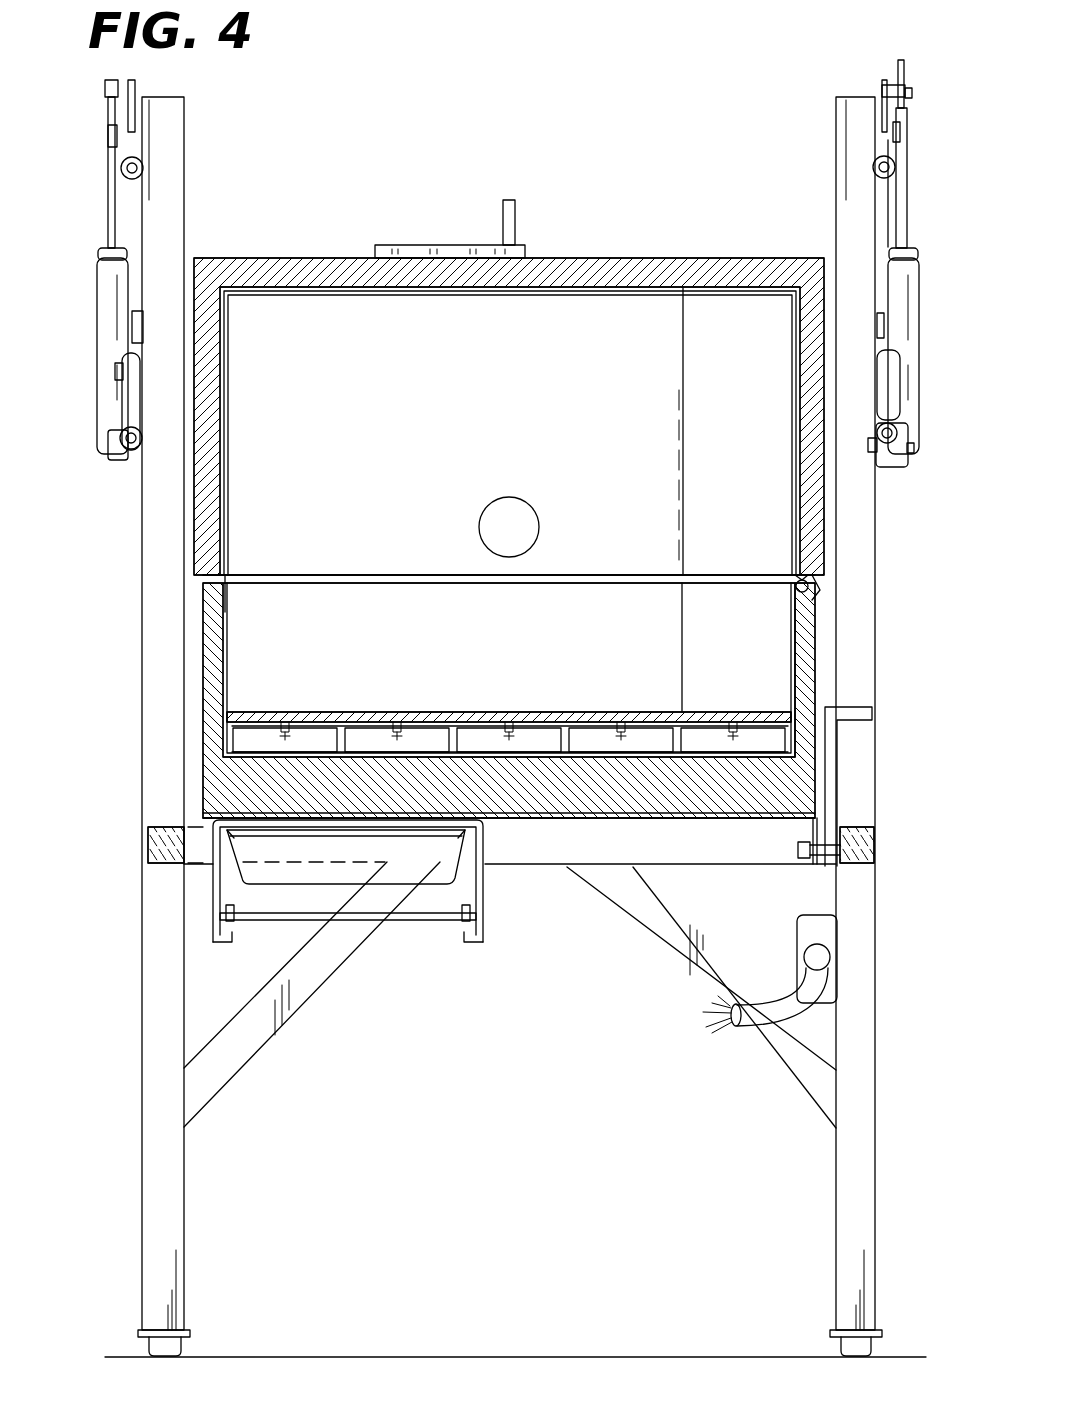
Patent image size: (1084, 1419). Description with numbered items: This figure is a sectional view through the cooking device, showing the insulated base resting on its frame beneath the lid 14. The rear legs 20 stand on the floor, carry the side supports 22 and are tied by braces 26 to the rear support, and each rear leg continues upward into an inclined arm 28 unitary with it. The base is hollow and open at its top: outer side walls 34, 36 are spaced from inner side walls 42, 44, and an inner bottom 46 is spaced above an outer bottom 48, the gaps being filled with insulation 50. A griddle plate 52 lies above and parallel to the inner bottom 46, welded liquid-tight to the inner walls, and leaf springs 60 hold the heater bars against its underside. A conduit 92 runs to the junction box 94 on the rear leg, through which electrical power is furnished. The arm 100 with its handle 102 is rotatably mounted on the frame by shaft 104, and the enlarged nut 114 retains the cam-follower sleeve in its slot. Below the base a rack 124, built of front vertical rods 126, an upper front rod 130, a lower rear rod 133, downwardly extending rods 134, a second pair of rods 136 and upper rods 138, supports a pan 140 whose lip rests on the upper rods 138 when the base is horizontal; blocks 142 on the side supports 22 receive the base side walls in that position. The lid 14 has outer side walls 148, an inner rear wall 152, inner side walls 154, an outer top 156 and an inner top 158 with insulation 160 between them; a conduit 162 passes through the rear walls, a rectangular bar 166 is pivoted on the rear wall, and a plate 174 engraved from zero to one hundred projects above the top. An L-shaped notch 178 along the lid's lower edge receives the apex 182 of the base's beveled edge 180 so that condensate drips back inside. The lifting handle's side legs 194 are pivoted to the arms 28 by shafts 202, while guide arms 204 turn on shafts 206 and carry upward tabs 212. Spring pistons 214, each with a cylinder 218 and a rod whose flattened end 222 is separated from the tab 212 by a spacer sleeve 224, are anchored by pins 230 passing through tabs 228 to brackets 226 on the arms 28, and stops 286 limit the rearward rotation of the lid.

The lid 14 is at (572, 254).
The rear legs 20 is at (152, 1125).
The side supports 22 is at (150, 838).
The braces 26 is at (230, 1052).
The arms 28 is at (165, 188).
The outer side wall 34 is at (817, 640).
The outer side wall 36 is at (206, 607).
The inner side wall 42 is at (818, 632).
The inner side wall 44 is at (224, 650).
The inner bottom 46 is at (261, 752).
The outer bottom 48 is at (690, 822).
The insulation 50 is at (555, 812).
The griddle plate 52 is at (487, 717).
The leaf springs 60 is at (418, 742).
The conduit 92 is at (782, 995).
The junction box 94 is at (807, 923).
The arm 100 is at (830, 742).
The handle 102 is at (866, 716).
The shaft 104 is at (850, 827).
The enlarged nut 114 is at (798, 848).
The rack 124 is at (487, 937).
The front vertical rods 126 is at (500, 877).
The upper front rod 130 is at (247, 818).
The lower rear rod 133 is at (367, 920).
The rods 134 is at (229, 940).
The second pair of rods 136 is at (462, 910).
The upper rods 138 is at (230, 835).
The pan 140 is at (382, 860).
The block 142 is at (197, 835).
The outer side walls 148 is at (222, 318).
The inner rear wall 152 is at (402, 397).
The inner side walls 154 is at (232, 350).
The outer top 156 is at (347, 260).
The inner top 158 is at (472, 292).
The insulation 160 is at (305, 260).
The conduit 162 is at (515, 497).
The rectangular bar 166 is at (516, 222).
The plate 174 is at (410, 246).
The L-shaped notch 178 is at (790, 588).
The beveled edge 180 is at (803, 600).
The apex 182 is at (822, 590).
The side legs 194 is at (131, 408).
The shafts 202 is at (120, 370).
The guide arm 204 is at (143, 160).
The shaft 206 is at (130, 153).
The tab 212 is at (136, 88).
The spring piston 214 is at (888, 268).
The cylinder 218 is at (903, 397).
The flattened end 222 is at (901, 60).
The spacer sleeve 224 is at (887, 93).
The bracket 226 is at (135, 460).
The tab 228 is at (880, 436).
The pin 230 is at (912, 455).
The stops 286 is at (136, 311).